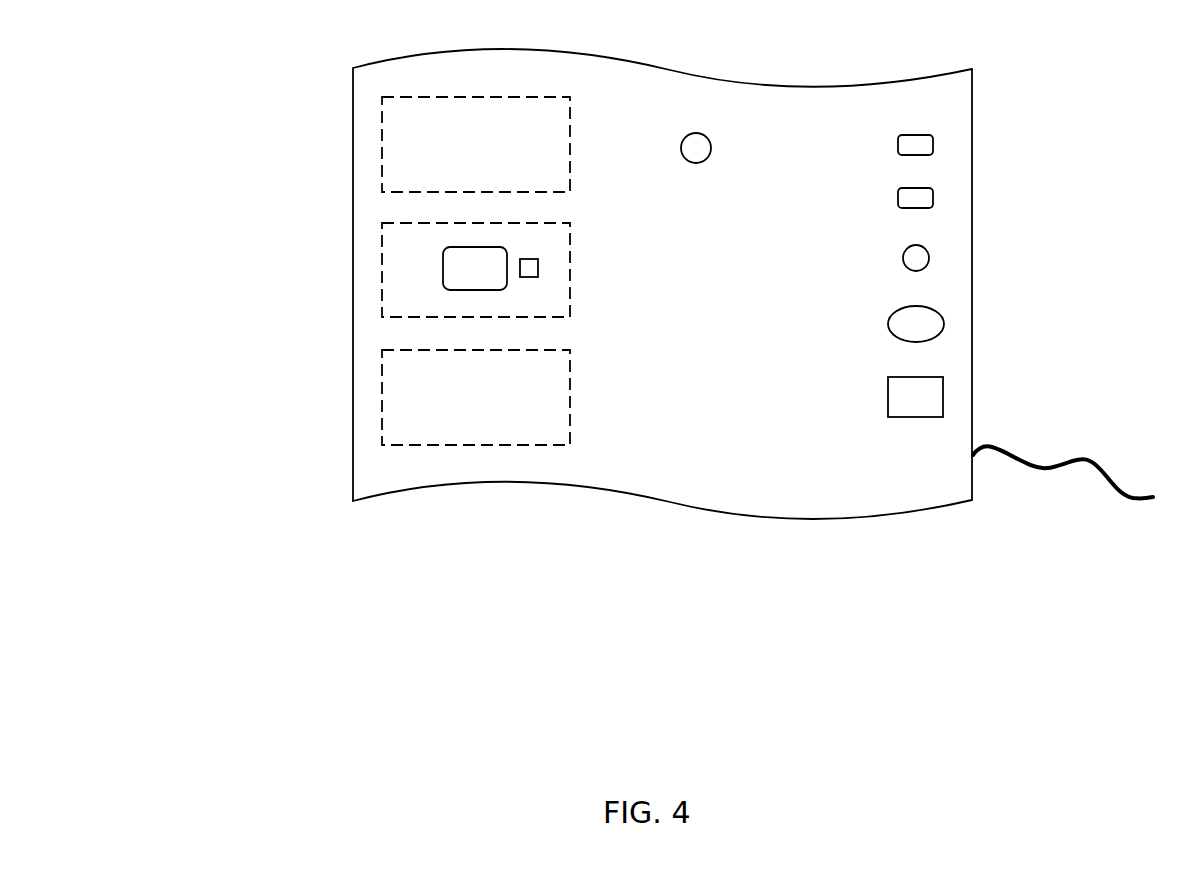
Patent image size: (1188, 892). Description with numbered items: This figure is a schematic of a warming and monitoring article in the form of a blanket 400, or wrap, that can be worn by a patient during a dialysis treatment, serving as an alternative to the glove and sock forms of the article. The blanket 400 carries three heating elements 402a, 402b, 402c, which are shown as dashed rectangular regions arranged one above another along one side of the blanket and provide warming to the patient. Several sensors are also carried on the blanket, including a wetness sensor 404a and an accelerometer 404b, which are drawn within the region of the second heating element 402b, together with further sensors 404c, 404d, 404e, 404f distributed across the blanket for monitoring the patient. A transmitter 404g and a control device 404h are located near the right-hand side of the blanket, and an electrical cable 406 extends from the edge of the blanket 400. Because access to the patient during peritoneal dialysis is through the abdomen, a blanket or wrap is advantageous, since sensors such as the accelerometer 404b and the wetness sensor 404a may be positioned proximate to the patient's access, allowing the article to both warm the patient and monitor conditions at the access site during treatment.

The flexible substrate panel 400 is at (932, 77).
The heating element 402a is at (401, 153).
The heating element 402b is at (401, 280).
The heating element 402c is at (400, 435).
The wetness sensor 404a is at (475, 275).
The accelerometer 404b is at (537, 267).
The sensor 404c is at (699, 143).
The sensor 404d is at (923, 143).
The sensor 404e is at (923, 198).
The sensor 404f is at (916, 258).
The transmitter 404g is at (925, 323).
The control device 404h is at (933, 393).
The electrical cable 406 is at (1107, 468).